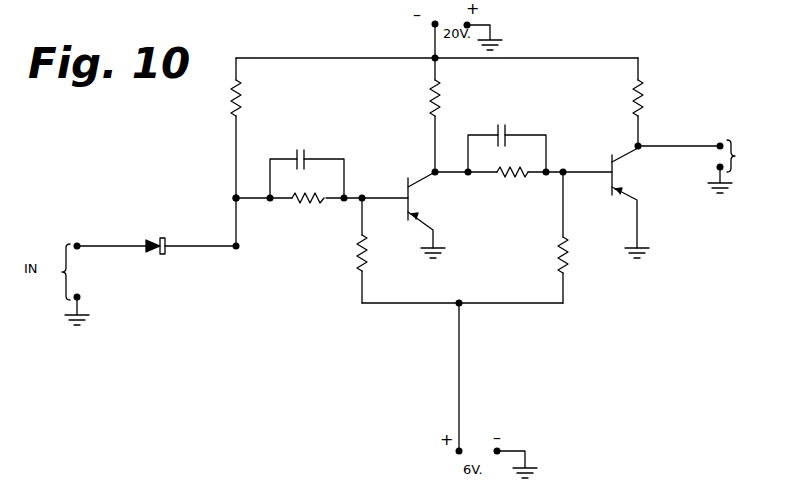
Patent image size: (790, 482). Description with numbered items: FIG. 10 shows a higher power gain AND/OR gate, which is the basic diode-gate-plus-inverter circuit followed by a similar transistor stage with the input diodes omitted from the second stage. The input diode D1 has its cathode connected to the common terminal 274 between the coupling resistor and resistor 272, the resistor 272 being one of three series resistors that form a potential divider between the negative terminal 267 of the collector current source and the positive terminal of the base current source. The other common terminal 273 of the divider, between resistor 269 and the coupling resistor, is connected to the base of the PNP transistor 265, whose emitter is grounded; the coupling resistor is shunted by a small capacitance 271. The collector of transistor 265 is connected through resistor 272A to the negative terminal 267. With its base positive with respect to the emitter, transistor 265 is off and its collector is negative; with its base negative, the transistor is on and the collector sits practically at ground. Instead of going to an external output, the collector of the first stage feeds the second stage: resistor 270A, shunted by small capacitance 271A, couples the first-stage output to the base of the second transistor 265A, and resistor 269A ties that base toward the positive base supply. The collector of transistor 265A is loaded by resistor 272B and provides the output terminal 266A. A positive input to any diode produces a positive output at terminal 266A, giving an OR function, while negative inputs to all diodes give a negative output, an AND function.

The resistor 272 is at (239, 96).
The common terminal of resistors 270, 272 274 is at (235, 198).
The small capacitance 271 is at (305, 154).
The common terminal of resistors 269, 270 273 is at (362, 200).
The resistor 269 is at (356, 264).
The negative terminal 267 is at (433, 57).
The resistor 272A is at (439, 96).
The small capacitance 271A is at (518, 135).
The resistor 270A is at (517, 183).
The resistor 269A is at (568, 259).
The transistor 265 is at (415, 179).
The transistor 265A is at (609, 154).
The resistor 272B is at (644, 90).
The output terminal 266A is at (719, 144).
The input diode D1 is at (156, 240).